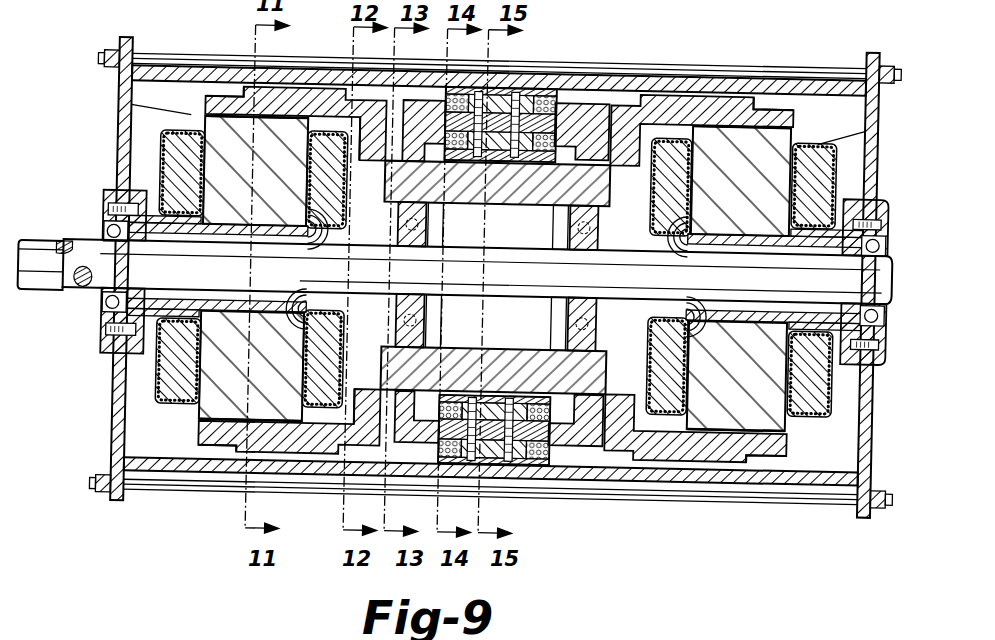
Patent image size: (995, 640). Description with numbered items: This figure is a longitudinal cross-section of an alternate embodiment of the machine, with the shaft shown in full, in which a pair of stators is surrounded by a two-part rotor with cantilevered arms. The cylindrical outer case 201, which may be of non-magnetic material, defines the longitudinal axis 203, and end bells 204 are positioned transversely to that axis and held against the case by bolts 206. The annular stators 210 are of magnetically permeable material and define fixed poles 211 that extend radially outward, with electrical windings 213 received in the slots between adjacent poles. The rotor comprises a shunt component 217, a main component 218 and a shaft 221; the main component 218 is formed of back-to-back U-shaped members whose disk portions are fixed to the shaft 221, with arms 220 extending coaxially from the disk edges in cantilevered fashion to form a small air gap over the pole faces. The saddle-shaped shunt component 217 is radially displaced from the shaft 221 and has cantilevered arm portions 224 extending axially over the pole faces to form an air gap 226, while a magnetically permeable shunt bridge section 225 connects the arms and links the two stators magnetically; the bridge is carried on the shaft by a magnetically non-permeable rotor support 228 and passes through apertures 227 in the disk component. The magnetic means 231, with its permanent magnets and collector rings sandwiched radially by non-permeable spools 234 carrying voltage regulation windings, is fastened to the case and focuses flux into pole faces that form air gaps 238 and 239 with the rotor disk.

The cylindrical outer case 201 is at (650, 76).
The longitudinal axis 203 is at (898, 282).
The end bells 204 is at (118, 130).
The bolts 206 is at (750, 100).
The stators 210 is at (128, 112).
The fixed poles 211 is at (223, 130).
The electrical windings 213 is at (160, 162).
The shunt component 217 is at (241, 72).
The main component 218 is at (458, 87).
The arms 220 is at (343, 230).
The shaft 221 is at (100, 231).
The cantilevered arm portions 224 is at (272, 96).
The shunt bridge section 225 is at (527, 188).
The air gap 226 is at (188, 122).
The apertures 227 is at (428, 97).
The rotor support 228 is at (418, 232).
The magnetic means 231 is at (498, 478).
The spools 234 is at (536, 94).
The air gap 238 is at (575, 480).
The air gap 239 is at (443, 457).